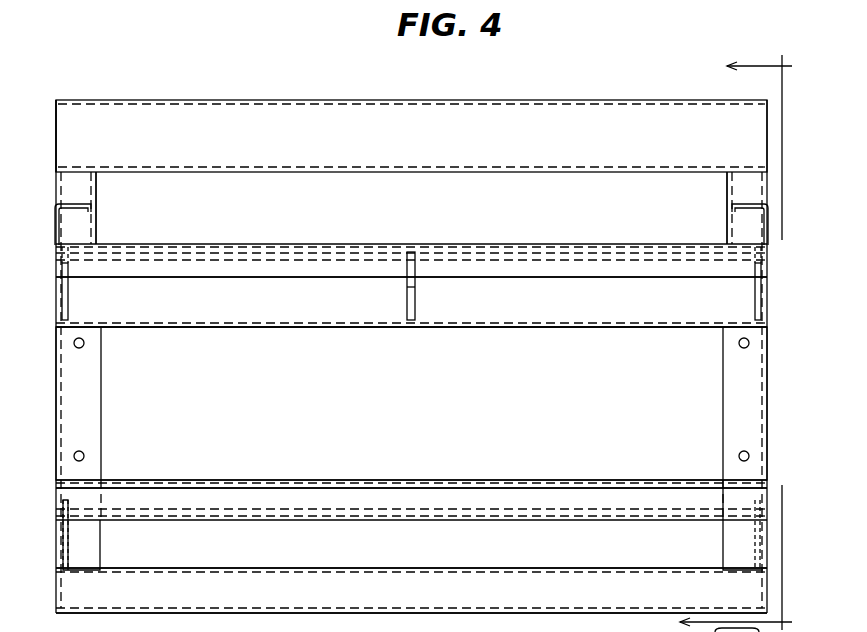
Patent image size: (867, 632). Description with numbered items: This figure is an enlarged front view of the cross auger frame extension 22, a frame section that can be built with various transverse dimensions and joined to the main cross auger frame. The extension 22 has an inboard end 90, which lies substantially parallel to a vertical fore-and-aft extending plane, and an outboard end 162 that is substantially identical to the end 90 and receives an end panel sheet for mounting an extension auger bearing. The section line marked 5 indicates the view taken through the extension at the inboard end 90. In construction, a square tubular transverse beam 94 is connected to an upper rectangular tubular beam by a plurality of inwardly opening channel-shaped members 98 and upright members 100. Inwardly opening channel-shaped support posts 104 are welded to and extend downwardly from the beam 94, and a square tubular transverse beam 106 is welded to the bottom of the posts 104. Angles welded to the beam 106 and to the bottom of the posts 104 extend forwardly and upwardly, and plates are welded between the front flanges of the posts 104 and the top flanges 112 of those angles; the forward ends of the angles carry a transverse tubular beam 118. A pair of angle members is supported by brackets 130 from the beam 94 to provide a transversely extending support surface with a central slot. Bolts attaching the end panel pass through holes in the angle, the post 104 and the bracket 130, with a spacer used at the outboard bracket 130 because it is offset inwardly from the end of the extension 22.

The outboard end 162 is at (52, 78).
The cross auger frame extension 22 is at (390, 84).
The inboard end 90 is at (763, 63).
The section view indicator 5 is at (724, 342).
The channel-shaped members 98 is at (86, 204).
The upright members 100 is at (88, 226).
The brackets 130 is at (70, 303).
The square tubular transverse beam 94 is at (450, 328).
The channel-shaped support posts 104 is at (101, 397).
The transverse tubular beam 118 is at (357, 481).
The top flanges 112 is at (100, 545).
The square tubular transverse beam 106 is at (323, 608).